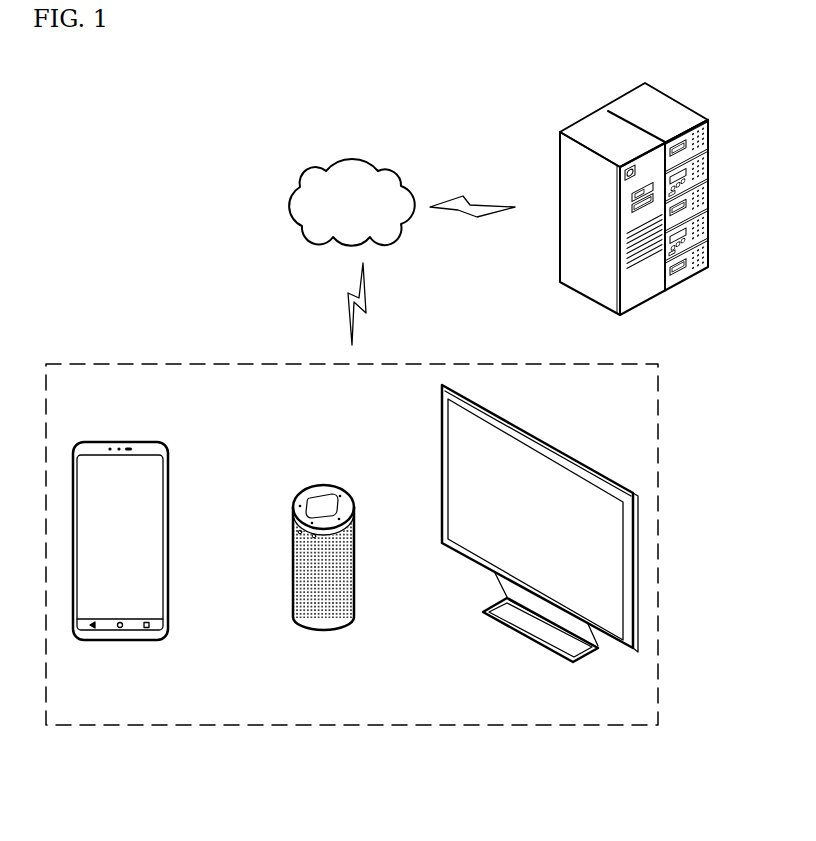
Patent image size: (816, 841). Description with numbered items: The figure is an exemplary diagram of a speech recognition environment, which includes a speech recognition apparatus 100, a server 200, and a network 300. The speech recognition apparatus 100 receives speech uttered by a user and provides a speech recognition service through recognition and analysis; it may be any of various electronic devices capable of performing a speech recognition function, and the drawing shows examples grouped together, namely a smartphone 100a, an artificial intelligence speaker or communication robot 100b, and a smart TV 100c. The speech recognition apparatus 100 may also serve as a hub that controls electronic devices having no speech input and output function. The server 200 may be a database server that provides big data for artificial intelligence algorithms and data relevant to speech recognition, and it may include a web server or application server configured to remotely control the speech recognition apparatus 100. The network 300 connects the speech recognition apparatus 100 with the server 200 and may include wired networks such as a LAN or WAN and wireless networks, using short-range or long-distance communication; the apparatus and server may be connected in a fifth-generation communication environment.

The speech recognition apparatus 100 is at (355, 725).
The smartphone 100a is at (120, 575).
The AI speaker or communication robot 100b is at (323, 596).
The smart TV 100c is at (540, 546).
The server 200 is at (585, 117).
The network 300 is at (347, 158).